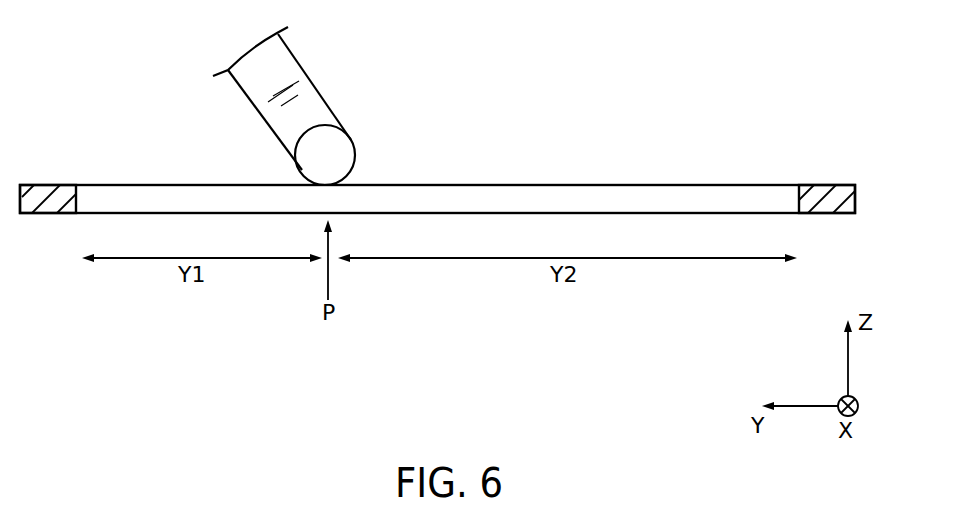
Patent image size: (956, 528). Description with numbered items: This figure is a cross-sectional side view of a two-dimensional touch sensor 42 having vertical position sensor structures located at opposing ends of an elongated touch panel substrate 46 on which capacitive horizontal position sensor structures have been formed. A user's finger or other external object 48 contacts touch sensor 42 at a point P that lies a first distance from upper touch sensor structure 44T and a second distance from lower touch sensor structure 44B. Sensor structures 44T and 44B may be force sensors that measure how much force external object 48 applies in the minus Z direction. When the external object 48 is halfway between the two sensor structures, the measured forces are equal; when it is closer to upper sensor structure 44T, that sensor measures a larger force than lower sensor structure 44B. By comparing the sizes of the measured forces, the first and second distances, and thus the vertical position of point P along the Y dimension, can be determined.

The touch sensor 42 is at (740, 84).
The upper touch sensor structure 44T is at (42, 192).
The lower touch sensor structure 44B is at (820, 193).
The display cover / sensor plate 46 is at (525, 193).
The external object 48 is at (313, 82).